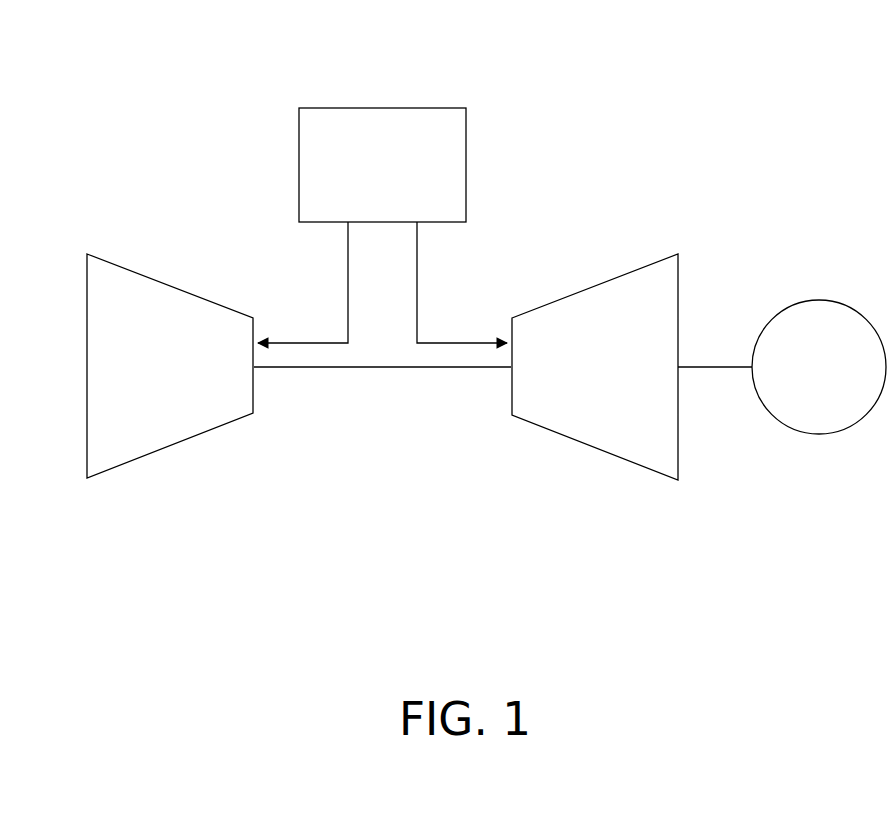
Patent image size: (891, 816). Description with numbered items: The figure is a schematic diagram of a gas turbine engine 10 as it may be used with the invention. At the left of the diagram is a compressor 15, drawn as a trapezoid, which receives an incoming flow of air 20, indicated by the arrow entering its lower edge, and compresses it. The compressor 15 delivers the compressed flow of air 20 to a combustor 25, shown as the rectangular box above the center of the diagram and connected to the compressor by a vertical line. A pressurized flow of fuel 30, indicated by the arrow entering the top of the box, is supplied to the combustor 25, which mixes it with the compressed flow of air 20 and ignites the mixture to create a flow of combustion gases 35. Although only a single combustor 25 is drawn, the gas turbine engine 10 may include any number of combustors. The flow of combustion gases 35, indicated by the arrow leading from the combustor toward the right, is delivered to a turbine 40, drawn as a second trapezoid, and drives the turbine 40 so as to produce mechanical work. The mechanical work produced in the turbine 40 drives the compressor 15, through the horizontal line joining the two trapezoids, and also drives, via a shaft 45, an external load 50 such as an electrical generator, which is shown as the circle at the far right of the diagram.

The gas turbine engine 10 is at (84, 104).
The compressor 15 is at (170, 366).
The flow of air 20 is at (131, 467).
The combustor 25 is at (382, 165).
The flow of fuel 30 is at (320, 104).
The flow of combustion gases 35 is at (442, 343).
The turbine 40 is at (595, 367).
The shaft 45 is at (708, 367).
The external load 50 is at (819, 367).